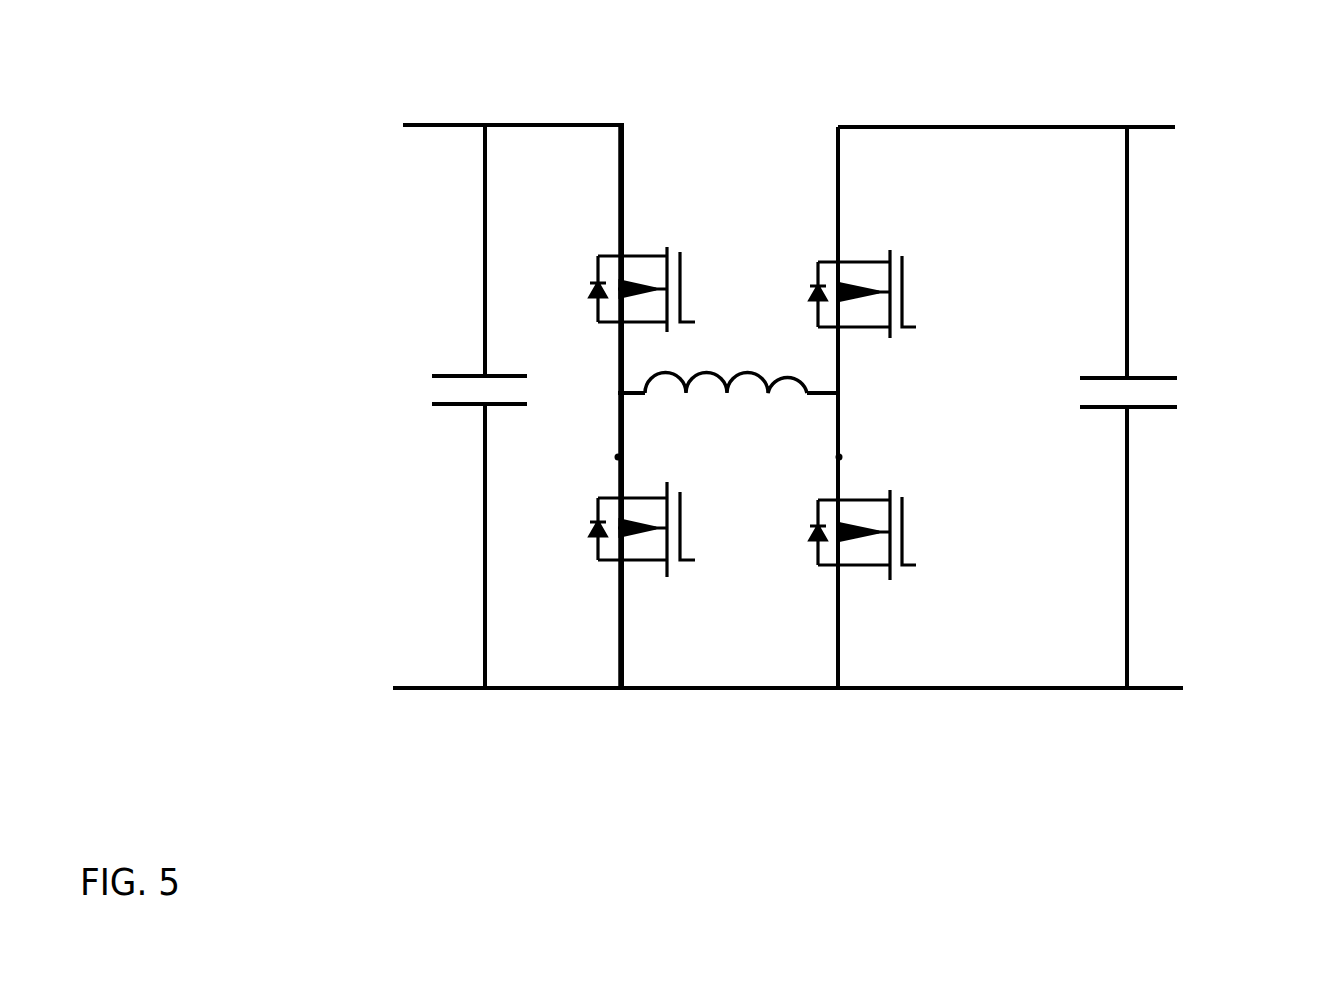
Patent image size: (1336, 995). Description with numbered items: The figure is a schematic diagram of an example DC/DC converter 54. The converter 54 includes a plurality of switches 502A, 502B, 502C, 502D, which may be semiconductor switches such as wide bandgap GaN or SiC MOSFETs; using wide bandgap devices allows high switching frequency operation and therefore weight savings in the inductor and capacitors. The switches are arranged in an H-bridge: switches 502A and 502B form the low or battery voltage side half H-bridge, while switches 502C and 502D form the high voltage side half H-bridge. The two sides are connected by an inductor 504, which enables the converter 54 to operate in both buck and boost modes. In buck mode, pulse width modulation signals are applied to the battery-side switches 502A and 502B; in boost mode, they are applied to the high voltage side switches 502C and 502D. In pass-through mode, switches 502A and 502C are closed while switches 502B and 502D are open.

The DC/DC converter 54 is at (1242, 50).
The switch 502A is at (606, 256).
The switch 502B is at (607, 498).
The switch 502C is at (866, 262).
The switch 502D is at (866, 500).
The inductor 504 is at (688, 396).